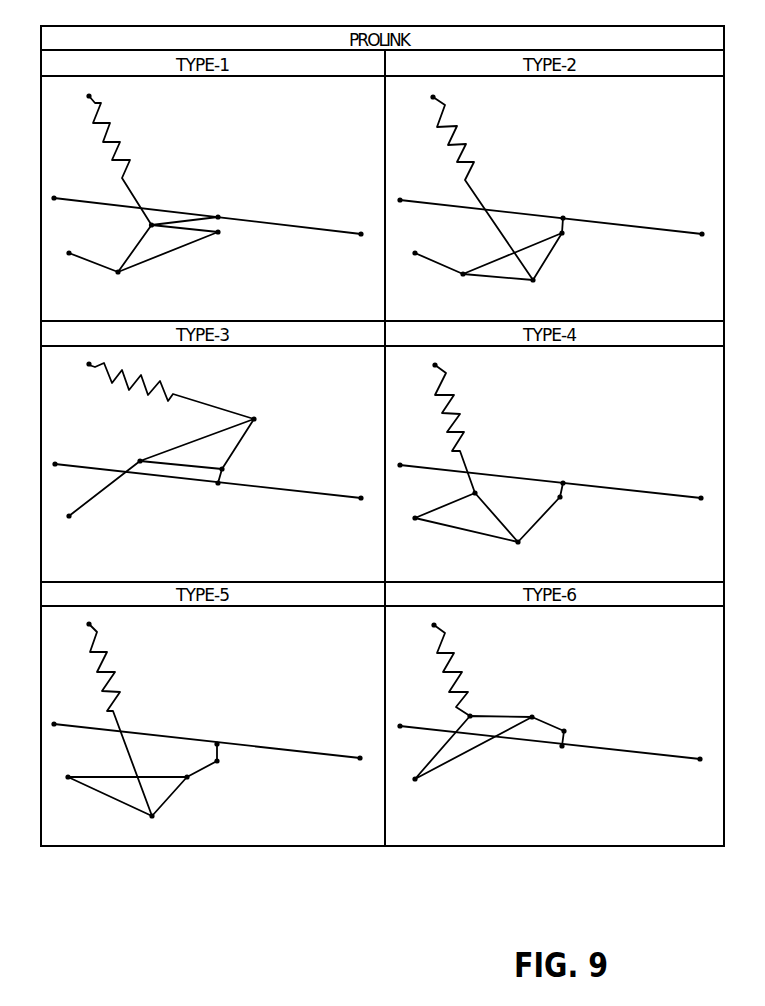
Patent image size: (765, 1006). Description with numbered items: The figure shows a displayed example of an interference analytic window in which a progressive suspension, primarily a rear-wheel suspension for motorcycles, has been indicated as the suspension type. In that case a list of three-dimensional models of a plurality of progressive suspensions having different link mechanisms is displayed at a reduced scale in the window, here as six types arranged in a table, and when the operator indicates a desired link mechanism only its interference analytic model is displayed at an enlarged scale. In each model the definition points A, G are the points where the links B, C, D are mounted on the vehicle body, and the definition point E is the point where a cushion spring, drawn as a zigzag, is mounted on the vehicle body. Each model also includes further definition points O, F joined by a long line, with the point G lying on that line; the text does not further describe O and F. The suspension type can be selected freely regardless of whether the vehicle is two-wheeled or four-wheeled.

The swing arm pivot O is at (227, 452).
The rear wheel axle F is at (532, 486).
The definition point E is at (261, 359).
The link D is at (334, 526).
The definition point G is at (389, 483).
The link C is at (398, 504).
The link B is at (324, 524).
The definition point A is at (236, 526).